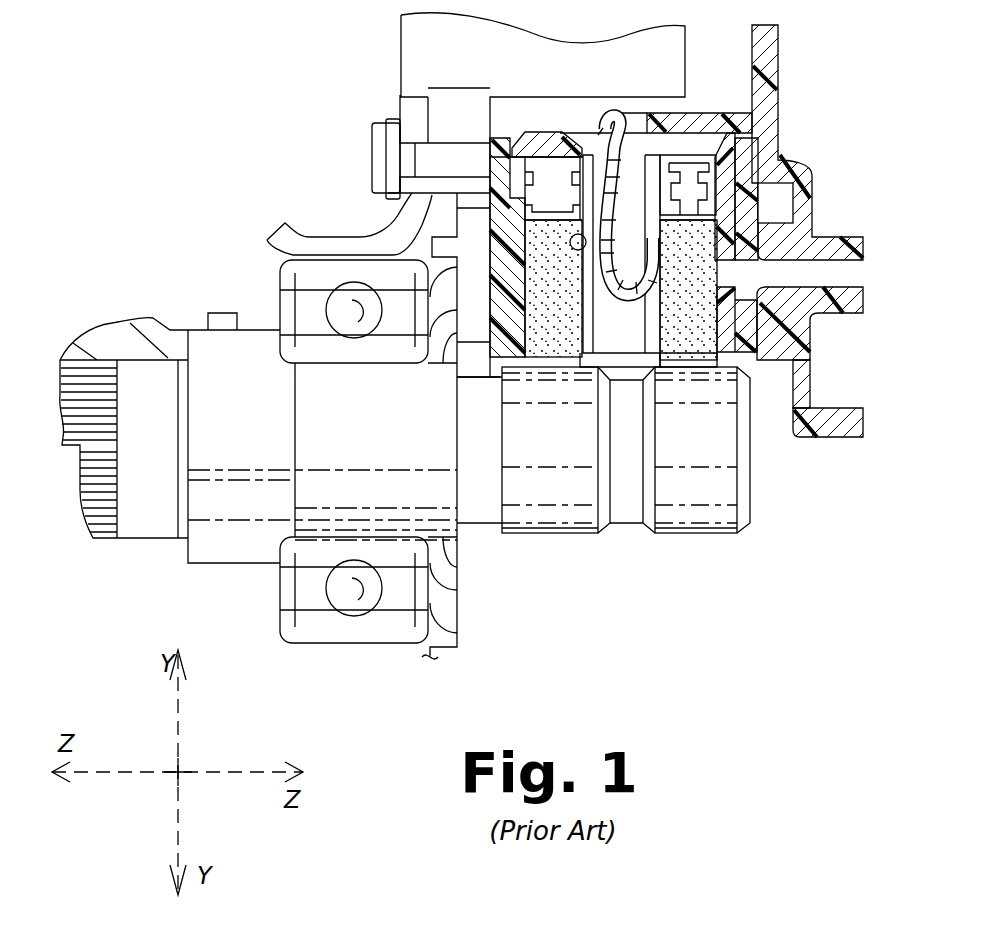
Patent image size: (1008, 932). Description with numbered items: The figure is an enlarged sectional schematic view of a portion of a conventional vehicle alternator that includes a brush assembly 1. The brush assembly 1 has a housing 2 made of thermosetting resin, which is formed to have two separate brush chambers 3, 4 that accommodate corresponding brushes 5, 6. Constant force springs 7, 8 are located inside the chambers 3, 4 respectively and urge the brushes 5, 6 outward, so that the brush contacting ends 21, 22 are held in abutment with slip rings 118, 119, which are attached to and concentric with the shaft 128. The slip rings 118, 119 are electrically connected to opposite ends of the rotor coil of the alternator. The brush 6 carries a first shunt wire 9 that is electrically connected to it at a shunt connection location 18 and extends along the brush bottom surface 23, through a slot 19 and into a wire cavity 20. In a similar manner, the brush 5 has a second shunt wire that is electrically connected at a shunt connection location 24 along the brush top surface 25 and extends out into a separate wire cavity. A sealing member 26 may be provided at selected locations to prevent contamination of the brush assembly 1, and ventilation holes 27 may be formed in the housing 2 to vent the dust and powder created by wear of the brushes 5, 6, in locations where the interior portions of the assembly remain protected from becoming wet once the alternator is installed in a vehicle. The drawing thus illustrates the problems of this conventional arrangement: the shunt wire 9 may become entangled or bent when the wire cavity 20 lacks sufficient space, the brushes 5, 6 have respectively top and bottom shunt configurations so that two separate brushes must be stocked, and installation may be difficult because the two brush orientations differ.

The brush assembly 1 is at (755, 158).
The housing 2 is at (530, 150).
The brush chamber 3 is at (540, 163).
The brush chamber 4 is at (681, 212).
The brush 5 is at (538, 290).
The brush 6 is at (676, 286).
The constant force spring 7 is at (576, 243).
The constant force spring 8 is at (710, 216).
The first shunt wire 9 is at (652, 242).
The shunt connection location 18 is at (674, 205).
The slot 19 is at (645, 220).
The wire cavity 20 is at (606, 326).
The brush contacting end 21 is at (541, 368).
The brush contacting end 22 is at (703, 367).
The brush bottom surface 23 is at (661, 362).
The shunt connection location 24 is at (566, 241).
The brush top surface 25 is at (598, 353).
The sealing member 26 is at (750, 334).
The ventilation holes 27 is at (745, 362).
The slip ring 118 is at (557, 524).
The slip ring 119 is at (677, 524).
The shaft 128 is at (627, 497).